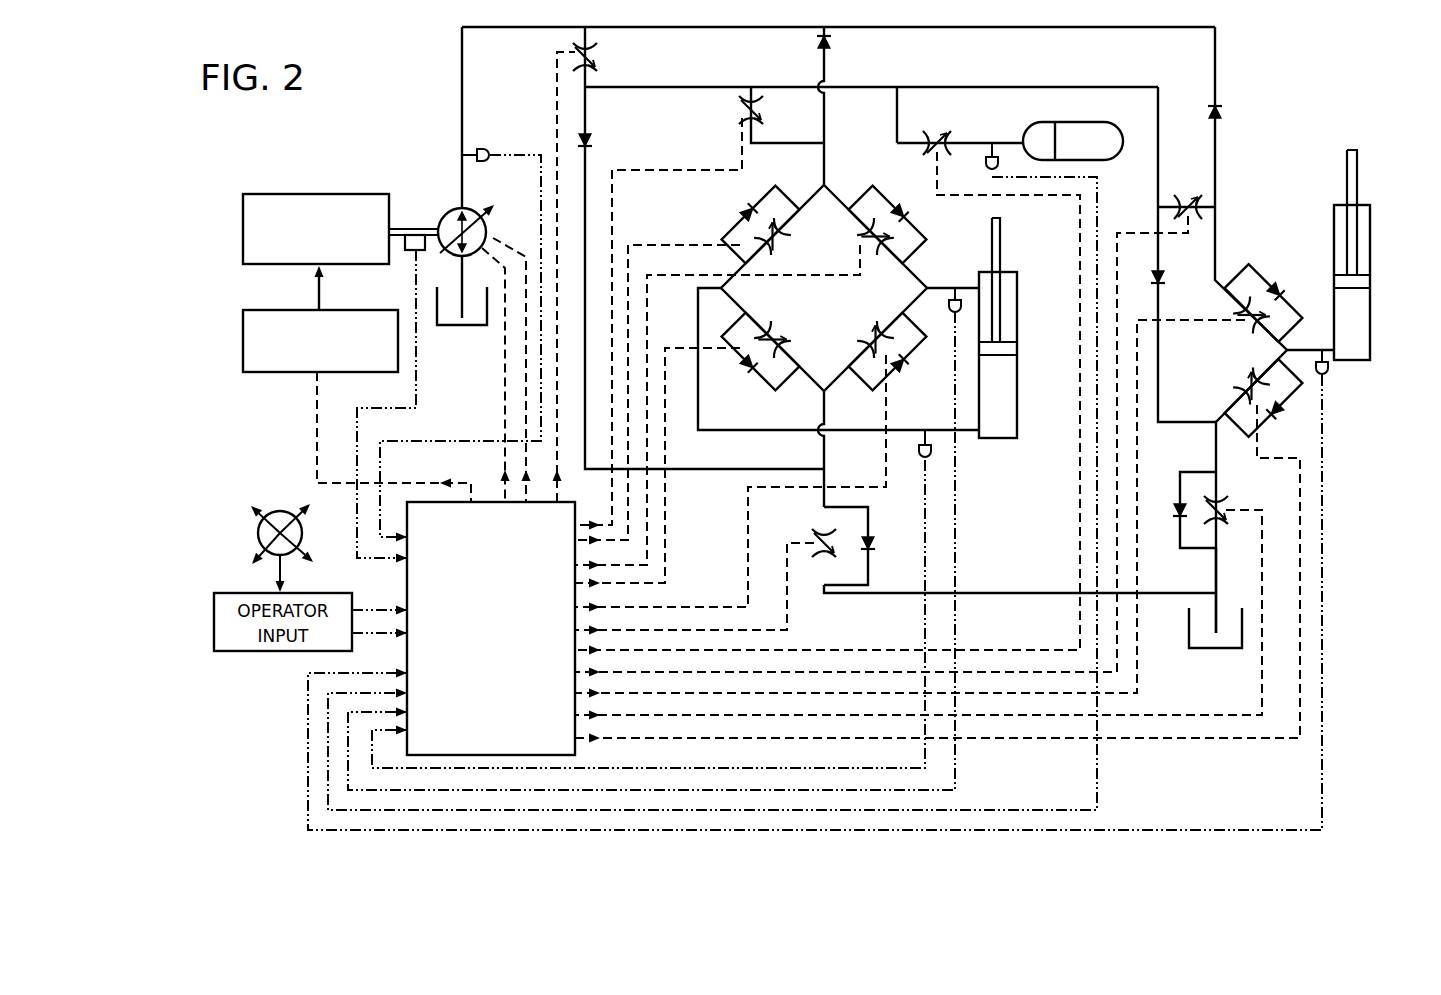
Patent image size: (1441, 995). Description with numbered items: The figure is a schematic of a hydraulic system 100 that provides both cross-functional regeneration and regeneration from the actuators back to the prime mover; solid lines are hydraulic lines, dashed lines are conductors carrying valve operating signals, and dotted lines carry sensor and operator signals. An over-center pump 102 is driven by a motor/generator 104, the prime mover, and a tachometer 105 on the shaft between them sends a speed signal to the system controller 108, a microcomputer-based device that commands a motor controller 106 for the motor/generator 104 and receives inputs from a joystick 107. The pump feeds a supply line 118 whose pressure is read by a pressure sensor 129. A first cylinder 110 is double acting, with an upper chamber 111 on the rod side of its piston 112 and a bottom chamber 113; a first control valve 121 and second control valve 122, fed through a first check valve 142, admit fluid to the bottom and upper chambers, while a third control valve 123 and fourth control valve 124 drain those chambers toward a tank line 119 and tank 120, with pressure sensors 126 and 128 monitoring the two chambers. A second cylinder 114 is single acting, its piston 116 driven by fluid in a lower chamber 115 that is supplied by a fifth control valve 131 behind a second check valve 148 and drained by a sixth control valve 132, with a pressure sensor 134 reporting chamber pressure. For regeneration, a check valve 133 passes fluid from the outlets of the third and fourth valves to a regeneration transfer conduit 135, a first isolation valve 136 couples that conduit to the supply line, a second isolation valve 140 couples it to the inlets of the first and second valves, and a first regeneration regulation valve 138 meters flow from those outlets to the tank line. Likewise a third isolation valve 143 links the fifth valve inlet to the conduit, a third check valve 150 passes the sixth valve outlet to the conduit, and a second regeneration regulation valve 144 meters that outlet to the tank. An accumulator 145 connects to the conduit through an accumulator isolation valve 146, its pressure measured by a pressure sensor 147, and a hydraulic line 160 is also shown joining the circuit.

The hydraulic system 100 is at (425, 145).
The over-center pump 102 is at (445, 210).
The motor/generator 104 is at (315, 194).
The tachometer 105 is at (408, 252).
The motor controller 106 is at (243, 342).
The joystick 107 is at (280, 510).
The system controller 108 is at (475, 682).
The first cylinder 110 is at (996, 445).
The upper chamber 111 is at (1005, 280).
The piston 112 is at (1006, 346).
The bottom chamber 113 is at (1008, 403).
The second cylinder 114 is at (1352, 332).
The lower chamber 115 is at (1363, 312).
The piston 116 is at (1340, 282).
The supply line 118 is at (503, 30).
The tank line 119 is at (1220, 612).
The tank 120 is at (462, 326).
The first control valve 121 is at (735, 218).
The second control valve 122 is at (905, 232).
The third control valve 123 is at (786, 390).
The fourth control valve 124 is at (860, 392).
The pressure sensor 126 is at (945, 303).
The pressure sensor 128 is at (918, 460).
The pressure sensor 129 is at (484, 148).
The fifth control valve 131 is at (1245, 272).
The sixth control valve 132 is at (1240, 378).
The check valve 133 is at (592, 141).
The pressure sensor 134 is at (1328, 378).
The regeneration transfer conduit 135 is at (995, 87).
The first isolation valve 136 is at (600, 60).
The first regeneration regulation valve 138 is at (818, 560).
The second isolation valve 140 is at (735, 110).
The first check valve 142 is at (817, 43).
The third isolation valve 143 is at (1195, 197).
The second regeneration regulation valve 144 is at (1222, 500).
The accumulator 145 is at (1104, 122).
The accumulator isolation valve 146 is at (925, 152).
The pressure sensor 147 is at (984, 166).
The second check valve 148 is at (1222, 110).
The third check valve 150 is at (1163, 280).
The hydraulic line 160 is at (712, 472).